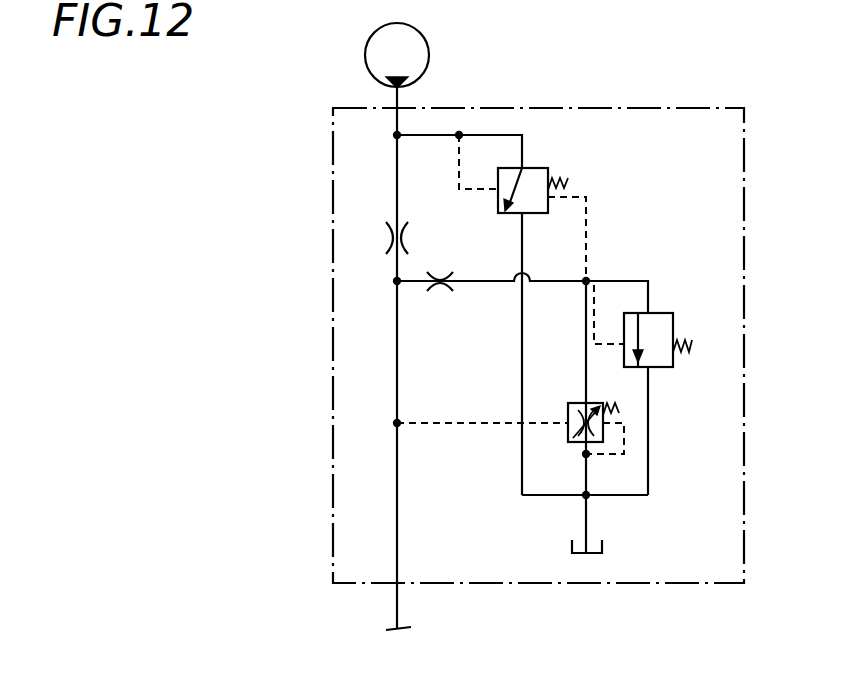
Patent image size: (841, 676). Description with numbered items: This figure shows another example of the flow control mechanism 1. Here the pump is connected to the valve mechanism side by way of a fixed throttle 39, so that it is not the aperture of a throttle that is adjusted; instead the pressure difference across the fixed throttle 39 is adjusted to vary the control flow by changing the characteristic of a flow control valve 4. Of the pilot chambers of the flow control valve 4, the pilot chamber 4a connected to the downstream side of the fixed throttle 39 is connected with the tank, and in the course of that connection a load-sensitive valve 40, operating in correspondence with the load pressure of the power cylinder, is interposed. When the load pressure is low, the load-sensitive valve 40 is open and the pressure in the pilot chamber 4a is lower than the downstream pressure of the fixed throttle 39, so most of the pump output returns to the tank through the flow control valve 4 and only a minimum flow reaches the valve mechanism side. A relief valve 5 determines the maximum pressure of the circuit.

The flow control mechanism 1 is at (705, 110).
The flow control valve 4 is at (547, 167).
The pilot chamber 4a is at (549, 197).
The relief valve 5 is at (673, 313).
The fixed throttle 39 is at (387, 239).
The load-sensitive valve 40 is at (568, 403).